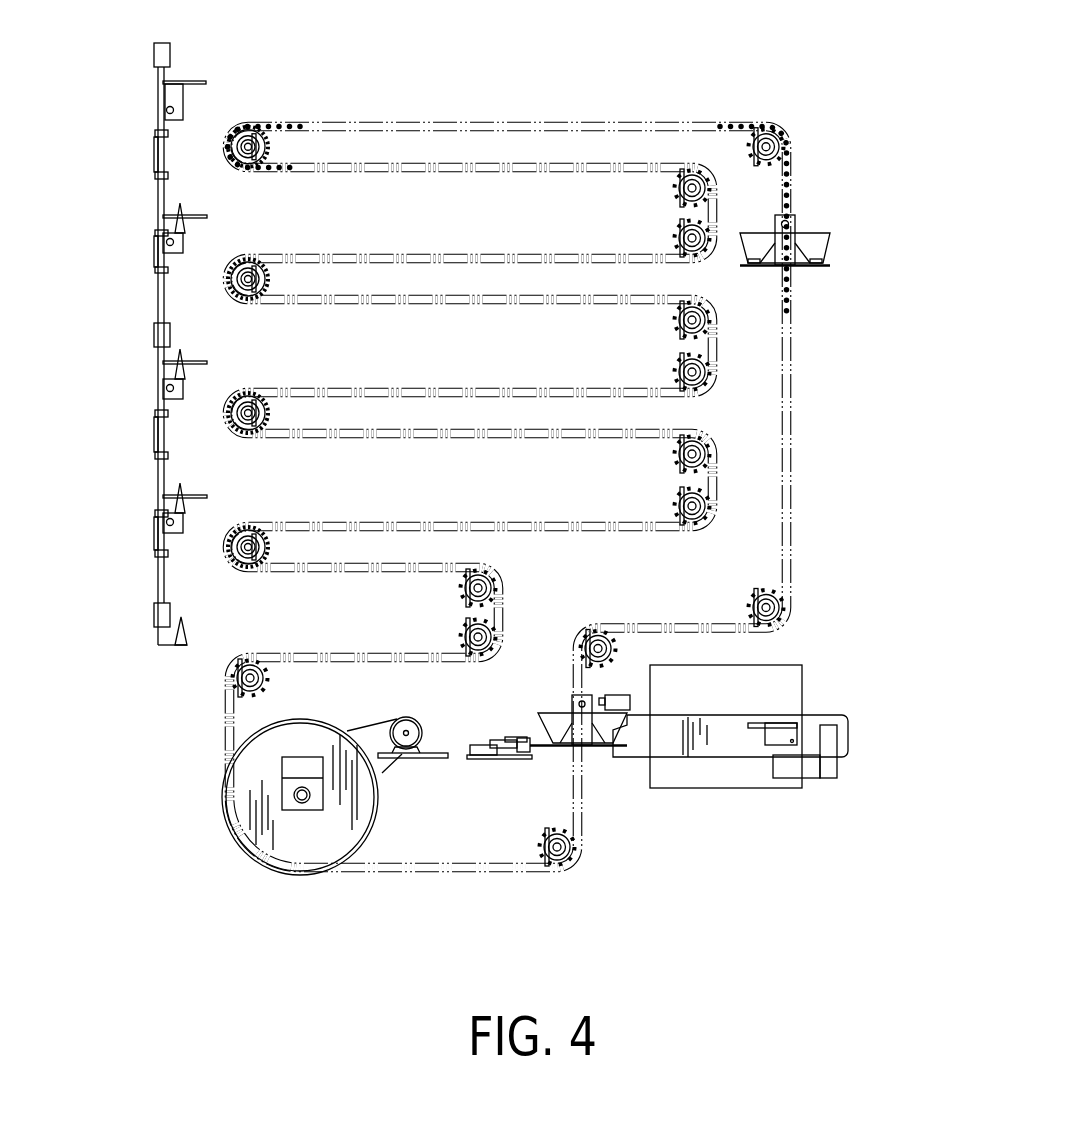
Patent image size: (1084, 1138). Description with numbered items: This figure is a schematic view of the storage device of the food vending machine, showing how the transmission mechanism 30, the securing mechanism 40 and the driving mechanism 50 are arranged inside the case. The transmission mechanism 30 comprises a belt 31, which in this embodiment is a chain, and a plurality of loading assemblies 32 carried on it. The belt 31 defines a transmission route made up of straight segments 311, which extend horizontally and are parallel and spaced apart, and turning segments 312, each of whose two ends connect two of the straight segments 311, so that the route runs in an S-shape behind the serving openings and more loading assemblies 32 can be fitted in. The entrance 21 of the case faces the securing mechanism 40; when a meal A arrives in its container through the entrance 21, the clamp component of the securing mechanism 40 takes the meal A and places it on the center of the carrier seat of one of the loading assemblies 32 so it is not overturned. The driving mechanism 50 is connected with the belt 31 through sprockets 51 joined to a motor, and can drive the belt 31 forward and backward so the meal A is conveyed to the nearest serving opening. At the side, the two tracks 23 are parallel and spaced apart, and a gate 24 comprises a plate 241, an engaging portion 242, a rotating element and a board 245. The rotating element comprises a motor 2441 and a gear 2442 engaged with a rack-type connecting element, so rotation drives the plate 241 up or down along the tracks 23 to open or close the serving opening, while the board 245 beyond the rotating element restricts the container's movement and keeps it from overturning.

The entrance 21 is at (753, 789).
The tracks 23 is at (163, 73).
The gate 24 is at (178, 344).
The plate 241 is at (156, 427).
The engaging portion 242 is at (182, 503).
The motor 2441 is at (175, 373).
The gear 2442 is at (163, 387).
The board 245 is at (202, 362).
The transmission mechanism 30 is at (523, 440).
The belt 31 is at (793, 158).
The straight segments 311 is at (290, 120).
The turning segments 312 is at (230, 124).
The loading assemblies 32 is at (823, 272).
The meal A is at (822, 244).
The securing mechanism 40 is at (787, 731).
The driving mechanism 50 is at (318, 823).
The sprockets 51 is at (305, 837).